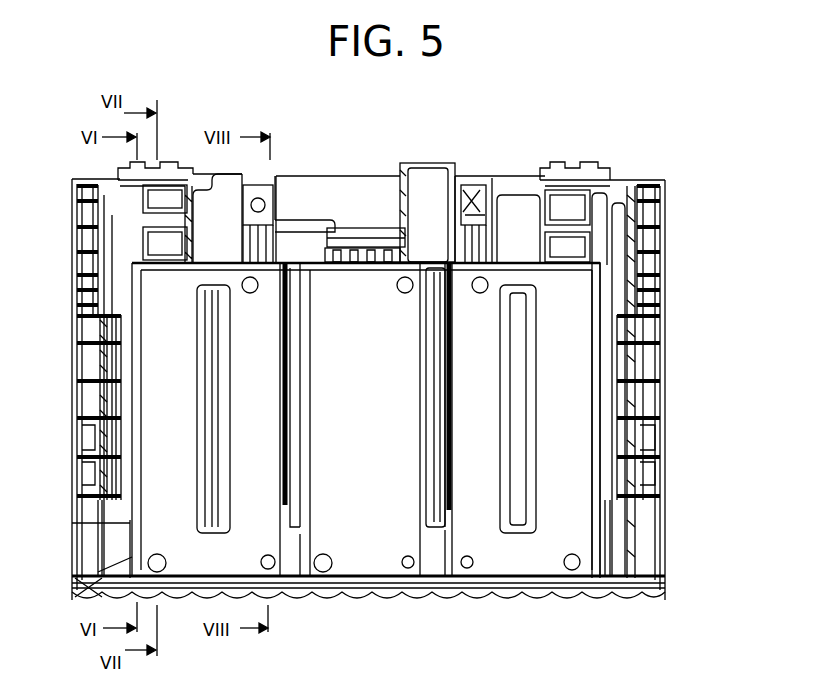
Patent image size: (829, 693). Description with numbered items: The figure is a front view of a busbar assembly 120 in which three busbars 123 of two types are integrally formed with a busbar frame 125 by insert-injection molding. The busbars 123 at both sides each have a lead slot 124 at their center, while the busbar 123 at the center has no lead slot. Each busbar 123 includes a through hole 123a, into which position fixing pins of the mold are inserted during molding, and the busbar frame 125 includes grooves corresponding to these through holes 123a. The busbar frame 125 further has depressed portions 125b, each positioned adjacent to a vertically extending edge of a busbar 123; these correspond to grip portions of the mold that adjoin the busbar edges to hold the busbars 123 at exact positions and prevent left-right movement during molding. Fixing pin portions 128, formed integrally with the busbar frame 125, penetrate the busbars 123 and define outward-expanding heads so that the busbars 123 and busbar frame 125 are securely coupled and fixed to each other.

The busbar assembly 120 is at (683, 197).
The busbar 123 is at (170, 518).
The through hole 123a is at (270, 553).
The lead slot 124 is at (523, 310).
The busbar frame 125 is at (618, 274).
The depressed portion 125b is at (424, 348).
The fixing pin portion 128 is at (112, 274).